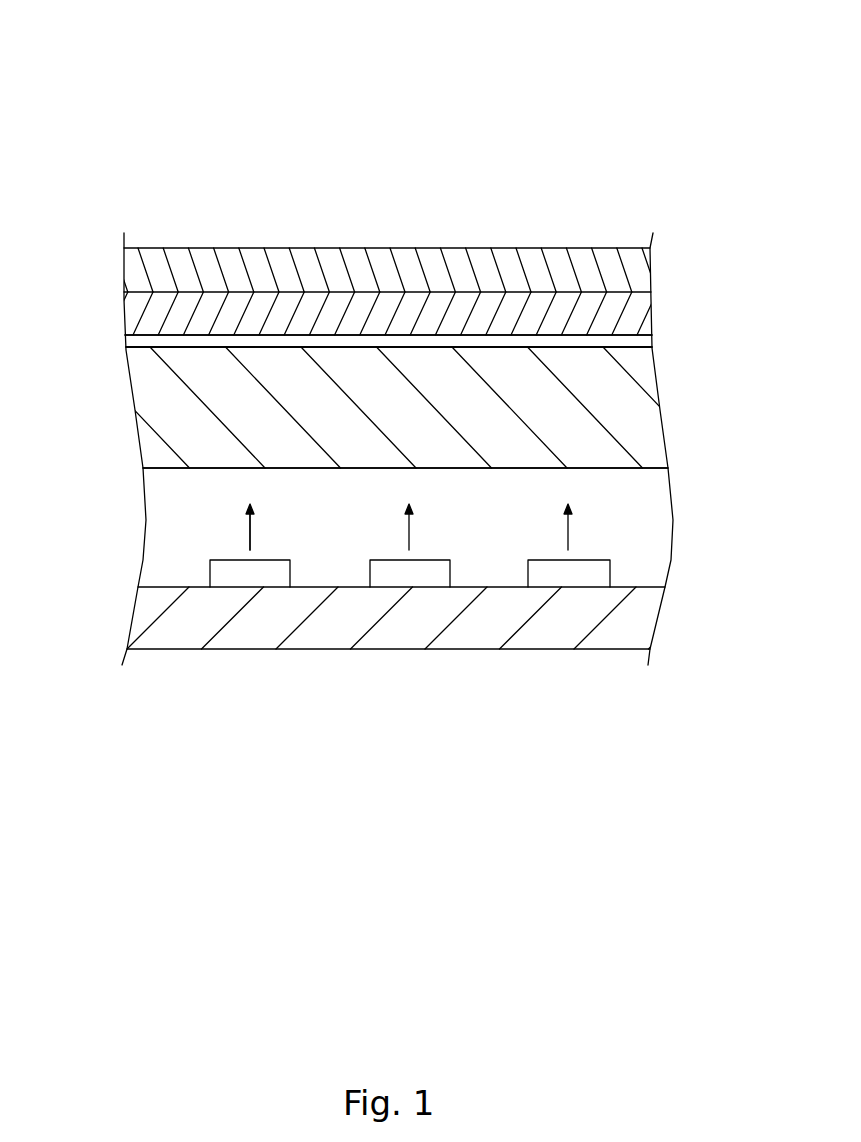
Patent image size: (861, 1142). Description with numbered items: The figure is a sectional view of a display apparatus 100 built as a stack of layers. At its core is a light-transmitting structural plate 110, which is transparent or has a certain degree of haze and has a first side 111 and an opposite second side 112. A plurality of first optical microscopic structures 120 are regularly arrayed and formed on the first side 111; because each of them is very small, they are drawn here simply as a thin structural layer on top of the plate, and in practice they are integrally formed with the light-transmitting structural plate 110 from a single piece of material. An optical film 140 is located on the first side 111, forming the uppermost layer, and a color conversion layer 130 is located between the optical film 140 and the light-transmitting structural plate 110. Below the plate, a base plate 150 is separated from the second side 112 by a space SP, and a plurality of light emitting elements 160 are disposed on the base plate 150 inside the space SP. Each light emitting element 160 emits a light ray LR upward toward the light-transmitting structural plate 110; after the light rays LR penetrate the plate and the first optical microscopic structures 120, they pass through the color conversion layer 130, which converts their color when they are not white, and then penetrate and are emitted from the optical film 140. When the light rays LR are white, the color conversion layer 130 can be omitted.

The display apparatus 100 is at (73, 47).
The light-transmitting structural plate 110 is at (647, 425).
The first side 111 is at (198, 347).
The second side 112 is at (178, 468).
The first optical microscopic structures 120 is at (645, 340).
The color conversion layer 130 is at (645, 311).
The optical film 140 is at (645, 271).
The base plate 150 is at (647, 620).
The light emitting elements 160 is at (600, 575).
The space SP is at (238, 535).
The light ray LR is at (405, 530).